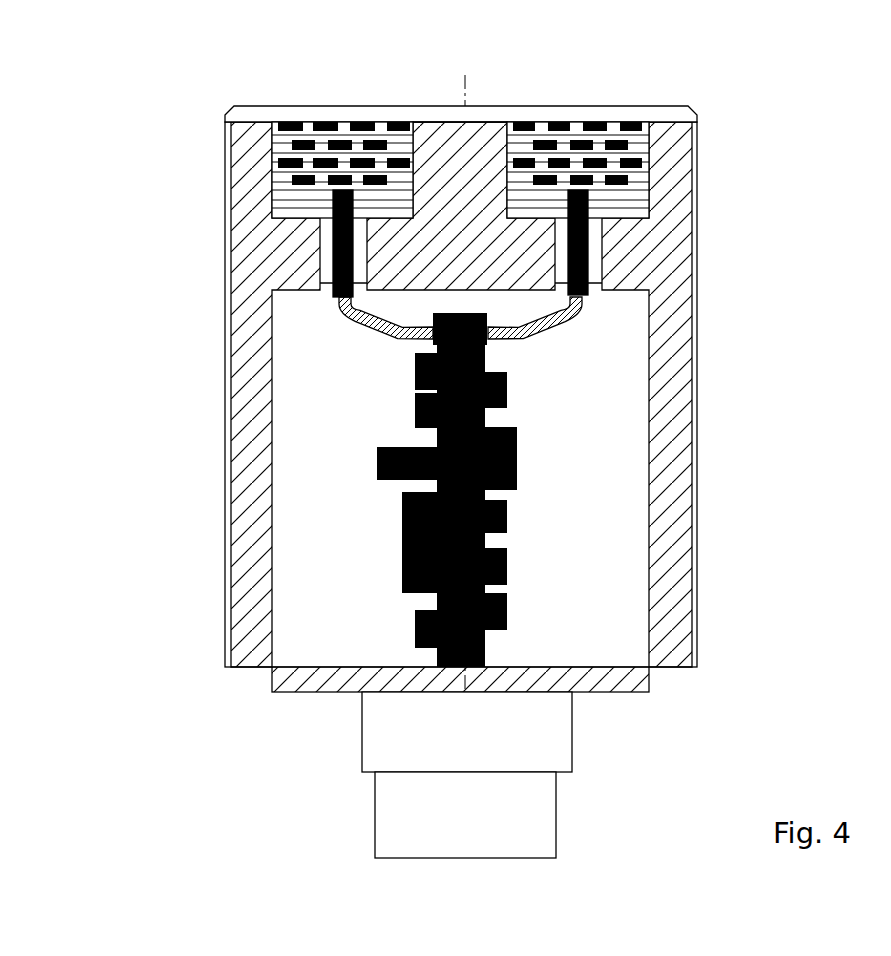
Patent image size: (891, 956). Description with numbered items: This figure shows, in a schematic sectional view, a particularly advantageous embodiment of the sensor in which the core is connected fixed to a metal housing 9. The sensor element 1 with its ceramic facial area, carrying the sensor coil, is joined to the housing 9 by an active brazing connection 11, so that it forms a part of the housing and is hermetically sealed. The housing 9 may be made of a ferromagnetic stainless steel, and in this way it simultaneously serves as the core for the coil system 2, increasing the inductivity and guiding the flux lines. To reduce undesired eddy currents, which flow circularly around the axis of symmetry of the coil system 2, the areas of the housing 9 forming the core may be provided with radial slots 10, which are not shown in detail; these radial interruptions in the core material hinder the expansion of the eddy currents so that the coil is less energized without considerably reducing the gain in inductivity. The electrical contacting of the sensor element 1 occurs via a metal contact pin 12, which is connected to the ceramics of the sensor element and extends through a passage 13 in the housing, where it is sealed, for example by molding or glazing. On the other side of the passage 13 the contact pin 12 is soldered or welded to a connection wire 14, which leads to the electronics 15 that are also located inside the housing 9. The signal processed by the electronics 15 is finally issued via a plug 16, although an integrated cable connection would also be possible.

The sensor element with ceramic facial area 1 is at (245, 98).
The coil system 2 is at (632, 124).
The housing made from metal 9 is at (679, 192).
The radial slots 10 is at (401, 195).
The active brazing connection sensor element-housing 11 is at (203, 124).
The contact pin 12 is at (600, 238).
The passage in the housing for contact pin 13 is at (611, 282).
The connection wire 14 is at (333, 319).
The electronics 15 is at (355, 476).
The plug 16 is at (355, 746).